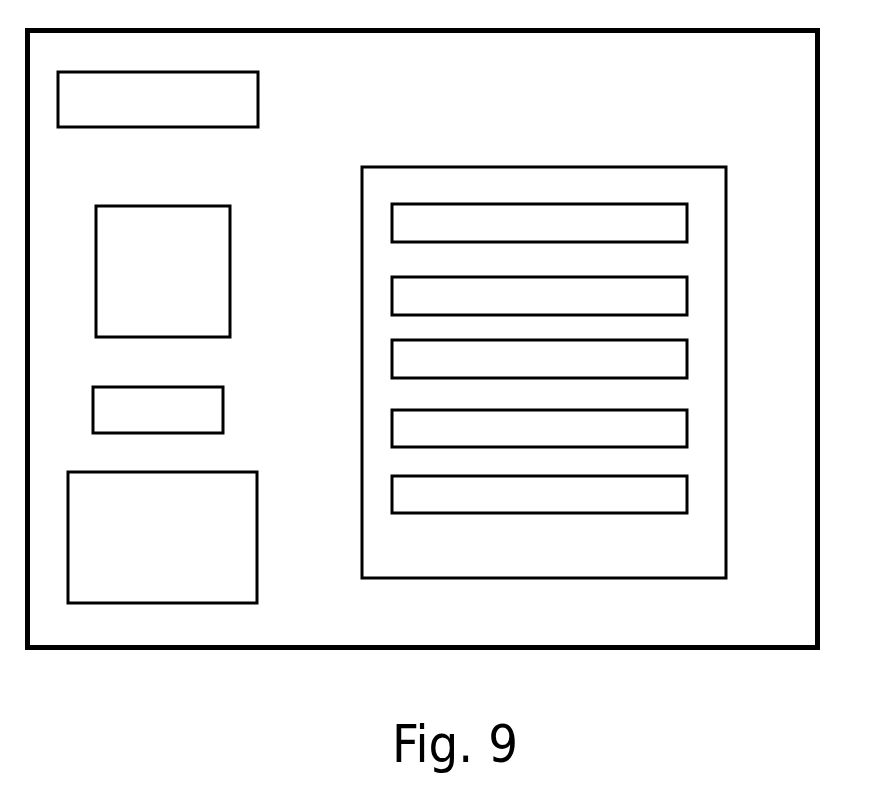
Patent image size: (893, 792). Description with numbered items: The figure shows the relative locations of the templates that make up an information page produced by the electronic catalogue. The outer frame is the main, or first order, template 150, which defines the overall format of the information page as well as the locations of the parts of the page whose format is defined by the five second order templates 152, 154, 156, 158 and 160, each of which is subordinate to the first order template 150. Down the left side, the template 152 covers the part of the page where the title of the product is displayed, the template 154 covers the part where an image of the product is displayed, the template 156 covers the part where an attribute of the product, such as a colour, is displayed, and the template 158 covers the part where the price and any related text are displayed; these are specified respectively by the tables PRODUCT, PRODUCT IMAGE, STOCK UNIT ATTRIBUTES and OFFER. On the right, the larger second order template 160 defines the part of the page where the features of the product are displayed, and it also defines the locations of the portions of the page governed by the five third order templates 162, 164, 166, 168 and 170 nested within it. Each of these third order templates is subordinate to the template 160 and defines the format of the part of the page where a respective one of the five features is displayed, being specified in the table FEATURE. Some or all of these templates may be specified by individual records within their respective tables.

The main template 150 is at (655, 651).
The second order template 152 is at (259, 101).
The second order template 154 is at (231, 268).
The second order template 156 is at (224, 411).
The second order template 158 is at (258, 548).
The second order template 160 is at (670, 579).
The third order template 162 is at (677, 225).
The third order template 164 is at (677, 299).
The third order template 166 is at (677, 362).
The third order template 168 is at (677, 431).
The third order template 170 is at (677, 496).